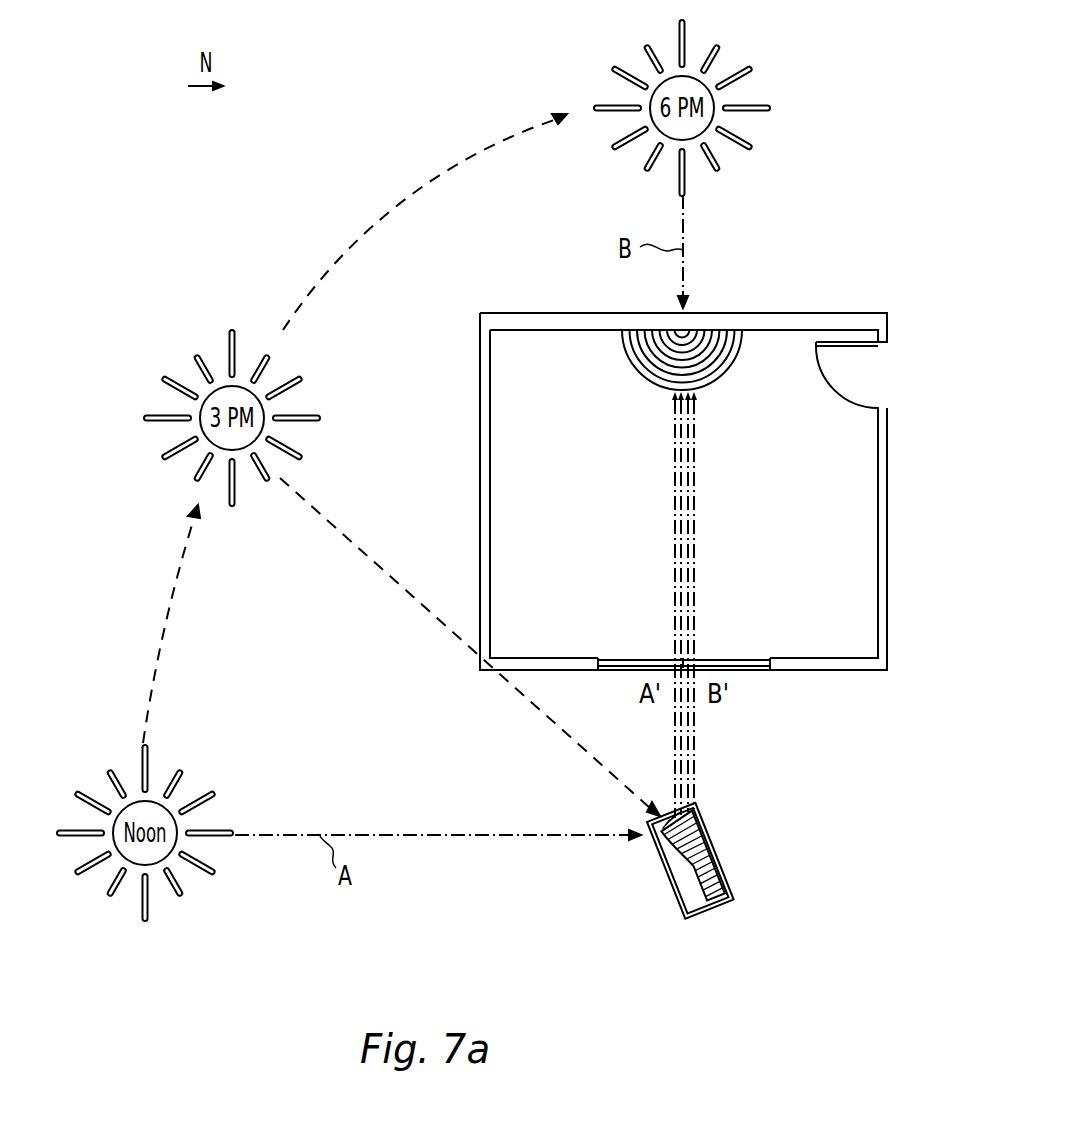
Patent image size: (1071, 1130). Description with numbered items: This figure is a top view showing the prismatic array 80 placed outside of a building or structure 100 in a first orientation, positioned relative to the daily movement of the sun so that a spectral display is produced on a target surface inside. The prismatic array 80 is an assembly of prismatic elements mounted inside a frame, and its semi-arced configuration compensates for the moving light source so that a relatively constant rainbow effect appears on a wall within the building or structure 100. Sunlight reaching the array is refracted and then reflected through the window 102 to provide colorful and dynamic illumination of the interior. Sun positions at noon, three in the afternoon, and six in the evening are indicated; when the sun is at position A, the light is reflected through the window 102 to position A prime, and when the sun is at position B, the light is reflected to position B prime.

The building or structure 100 is at (480, 500).
The window 102 is at (617, 672).
The prismatic array 80 is at (741, 829).